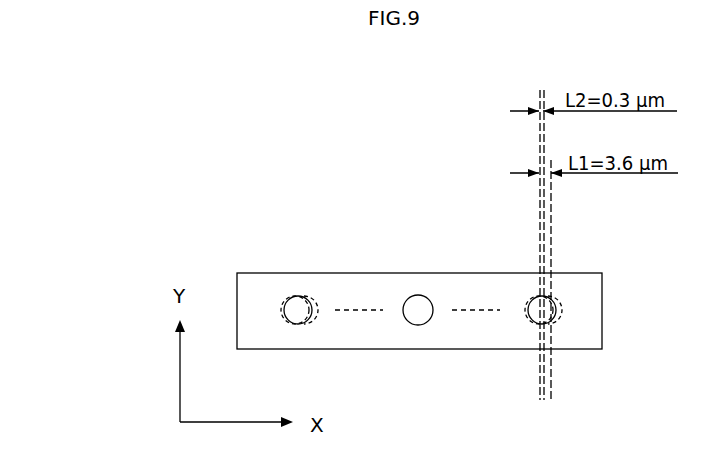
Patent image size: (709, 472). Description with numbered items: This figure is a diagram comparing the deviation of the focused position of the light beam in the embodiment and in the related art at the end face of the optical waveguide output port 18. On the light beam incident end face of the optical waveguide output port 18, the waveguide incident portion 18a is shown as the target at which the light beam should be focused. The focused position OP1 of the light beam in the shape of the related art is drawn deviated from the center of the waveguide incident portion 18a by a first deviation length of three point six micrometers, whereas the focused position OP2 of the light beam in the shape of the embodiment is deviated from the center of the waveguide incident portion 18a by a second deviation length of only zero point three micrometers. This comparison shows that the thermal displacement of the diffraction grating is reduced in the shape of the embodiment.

The optical waveguide output port 18 is at (240, 273).
The waveguide incident portion 18a is at (291, 297).
The focused position of the light beam in the related art OP1 is at (310, 320).
The focused position of the light beam in the embodiment OP2 is at (312, 300).